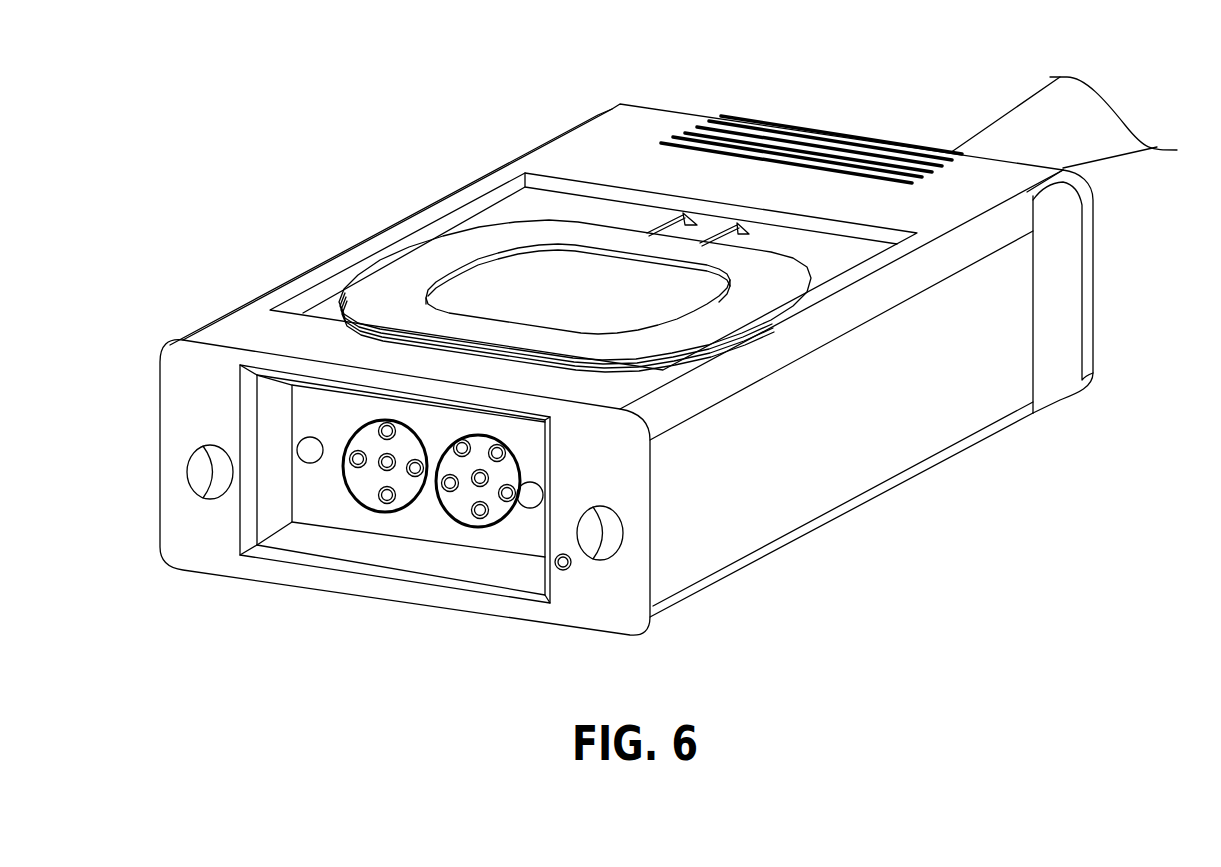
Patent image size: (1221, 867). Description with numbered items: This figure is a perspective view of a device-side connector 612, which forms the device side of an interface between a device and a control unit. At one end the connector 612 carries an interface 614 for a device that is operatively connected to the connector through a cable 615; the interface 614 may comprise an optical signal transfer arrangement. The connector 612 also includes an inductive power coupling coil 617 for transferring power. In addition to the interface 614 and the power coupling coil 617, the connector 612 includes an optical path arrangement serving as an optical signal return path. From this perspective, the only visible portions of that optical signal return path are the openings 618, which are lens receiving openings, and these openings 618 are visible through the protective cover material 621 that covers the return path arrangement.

The device-side connector 612 is at (890, 560).
The interface 614 is at (490, 536).
The cable 615 is at (1013, 130).
The inductive power coupling coil 617 is at (413, 273).
The openings 618 is at (407, 489).
The protective cover material 621 is at (341, 558).